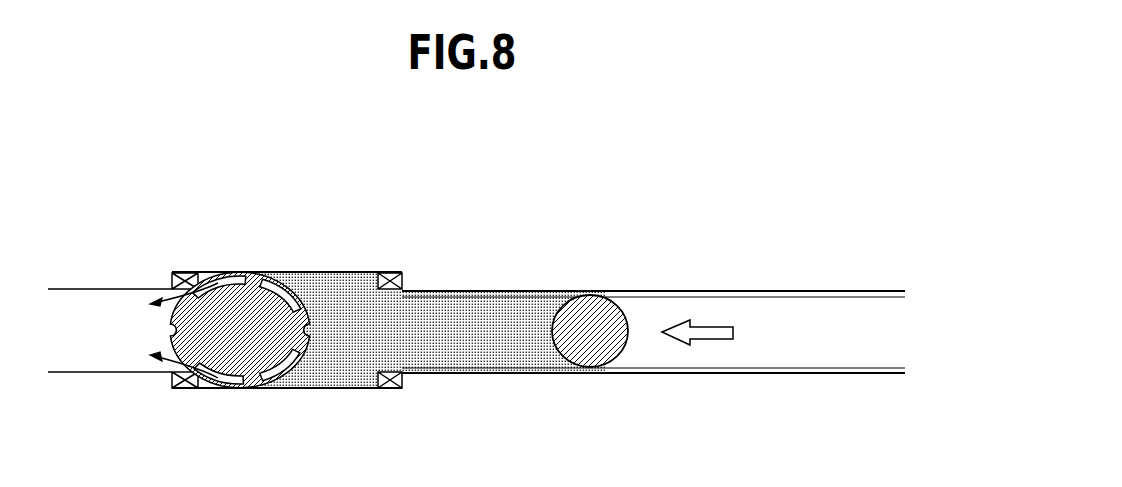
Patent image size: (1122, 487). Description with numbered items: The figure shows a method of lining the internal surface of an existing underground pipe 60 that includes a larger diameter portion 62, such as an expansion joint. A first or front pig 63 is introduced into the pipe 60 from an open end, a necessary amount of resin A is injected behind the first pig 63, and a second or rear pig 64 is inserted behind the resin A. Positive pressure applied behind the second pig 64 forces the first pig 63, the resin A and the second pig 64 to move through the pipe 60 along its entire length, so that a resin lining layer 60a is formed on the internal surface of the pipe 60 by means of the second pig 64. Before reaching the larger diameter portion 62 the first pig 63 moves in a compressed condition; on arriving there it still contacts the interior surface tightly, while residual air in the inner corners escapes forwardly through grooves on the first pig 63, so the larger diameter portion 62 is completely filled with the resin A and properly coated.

The pipe 60 is at (508, 289).
The resin lining layer 60a is at (672, 298).
The larger diameter portion 62 is at (322, 272).
The first pig 63 is at (252, 352).
The second pig 64 is at (607, 343).
The resin A is at (462, 330).